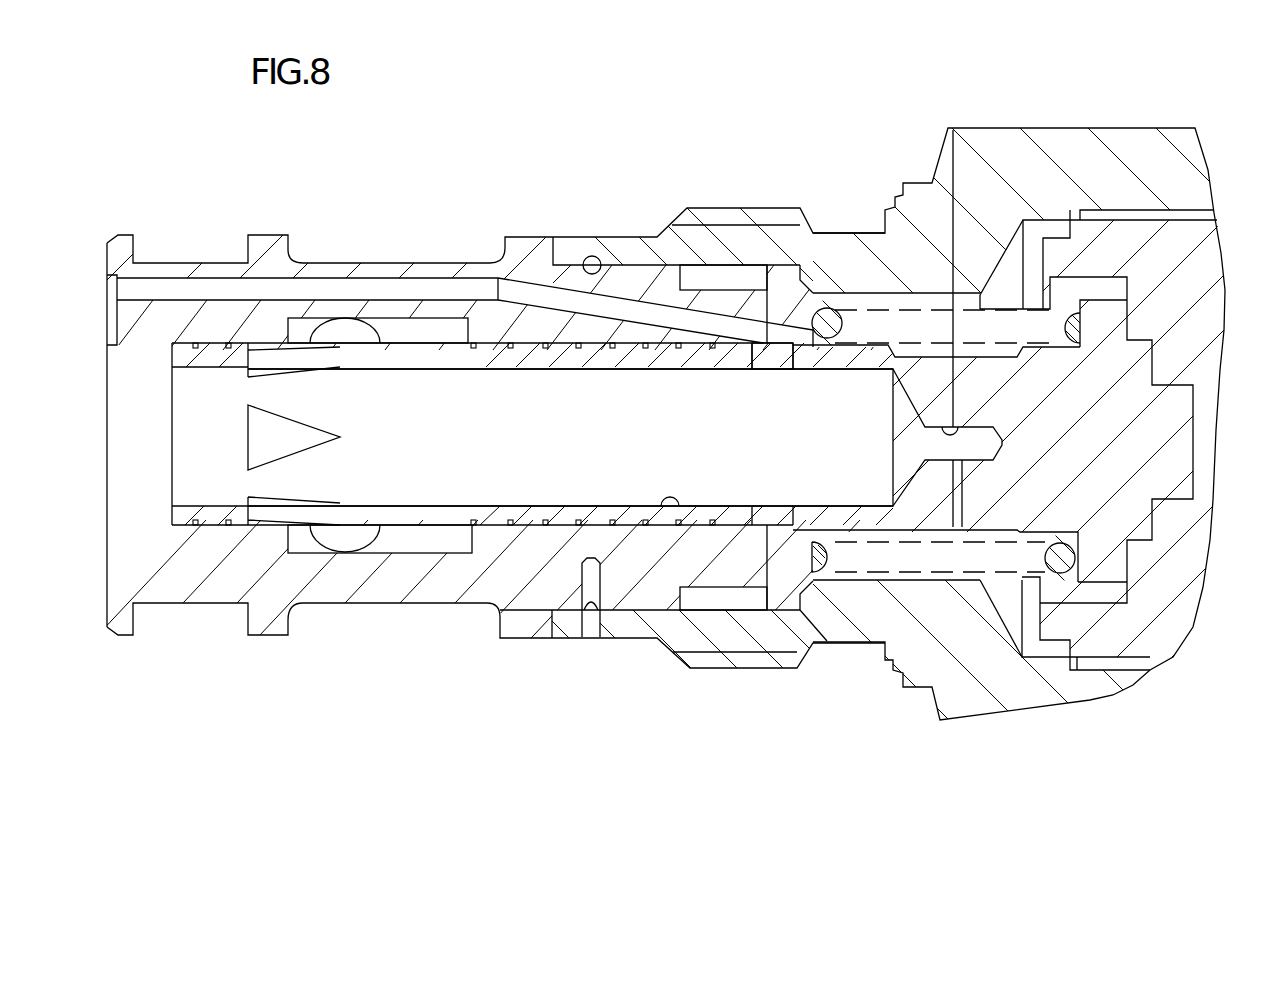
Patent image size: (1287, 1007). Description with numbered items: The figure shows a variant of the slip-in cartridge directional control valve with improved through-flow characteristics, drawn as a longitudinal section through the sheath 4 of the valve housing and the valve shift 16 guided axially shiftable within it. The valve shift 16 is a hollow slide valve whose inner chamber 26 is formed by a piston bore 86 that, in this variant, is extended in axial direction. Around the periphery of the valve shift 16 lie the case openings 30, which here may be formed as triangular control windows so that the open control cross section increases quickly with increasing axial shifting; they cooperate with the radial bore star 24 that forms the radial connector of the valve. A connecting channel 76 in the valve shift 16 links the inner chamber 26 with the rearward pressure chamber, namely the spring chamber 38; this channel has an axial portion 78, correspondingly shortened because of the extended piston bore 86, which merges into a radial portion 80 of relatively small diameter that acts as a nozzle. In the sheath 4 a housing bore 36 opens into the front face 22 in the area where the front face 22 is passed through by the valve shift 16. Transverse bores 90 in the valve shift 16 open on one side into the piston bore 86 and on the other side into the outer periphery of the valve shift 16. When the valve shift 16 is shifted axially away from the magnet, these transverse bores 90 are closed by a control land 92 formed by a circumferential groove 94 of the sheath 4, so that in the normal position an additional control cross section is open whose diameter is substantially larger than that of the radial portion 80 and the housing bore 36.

The sheath 4 is at (511, 250).
The valve shift 16 is at (414, 515).
The front face 22 is at (824, 590).
The radial bore star 24 is at (347, 318).
The inner chamber 26 is at (625, 437).
The case openings 30 is at (293, 447).
The housing bore 36 is at (268, 280).
The spring chamber 38 is at (910, 325).
The connecting channel 76 is at (984, 408).
The axial portion 78 is at (955, 230).
The radial portion 80 is at (958, 532).
The piston bore 86 is at (659, 508).
The transverse bores 90 is at (790, 343).
The control land 92 is at (775, 343).
The circumferential groove 94 is at (790, 548).